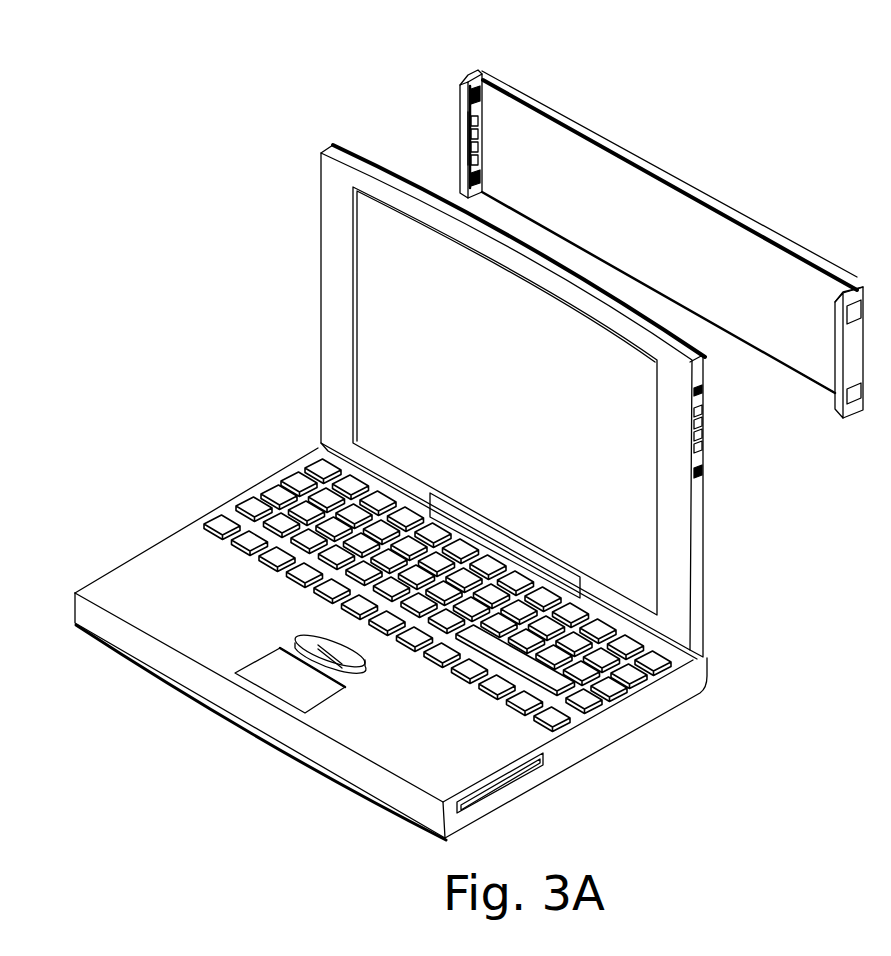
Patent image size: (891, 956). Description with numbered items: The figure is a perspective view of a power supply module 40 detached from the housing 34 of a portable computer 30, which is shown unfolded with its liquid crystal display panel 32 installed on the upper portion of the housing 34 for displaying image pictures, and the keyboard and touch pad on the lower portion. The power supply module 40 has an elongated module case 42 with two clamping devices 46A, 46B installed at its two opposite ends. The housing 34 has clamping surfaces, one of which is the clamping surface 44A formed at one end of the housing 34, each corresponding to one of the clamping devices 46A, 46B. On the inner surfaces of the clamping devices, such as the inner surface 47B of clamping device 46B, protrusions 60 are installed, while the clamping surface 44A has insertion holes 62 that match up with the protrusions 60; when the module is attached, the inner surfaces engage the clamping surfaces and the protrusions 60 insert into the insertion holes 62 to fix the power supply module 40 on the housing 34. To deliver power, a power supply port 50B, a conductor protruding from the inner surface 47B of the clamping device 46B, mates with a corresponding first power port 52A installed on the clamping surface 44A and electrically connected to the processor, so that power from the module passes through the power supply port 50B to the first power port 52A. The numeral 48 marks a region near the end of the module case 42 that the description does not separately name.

The portable computer 30 is at (475, 40).
The liquid crystal display panel 32 is at (373, 390).
The housing 34 is at (705, 656).
The power supply module 40 is at (696, 178).
The module case 42 is at (620, 148).
The clamping surface 44A is at (703, 416).
The clamping device 46A is at (857, 283).
The clamping device 46B is at (472, 73).
The inner surface 47B is at (468, 148).
The bar edge 48 is at (817, 378).
The power supply port 50B is at (468, 120).
The first power port 52A is at (707, 406).
The protrusion 60 is at (482, 98).
The insertion hole 62 is at (700, 390).